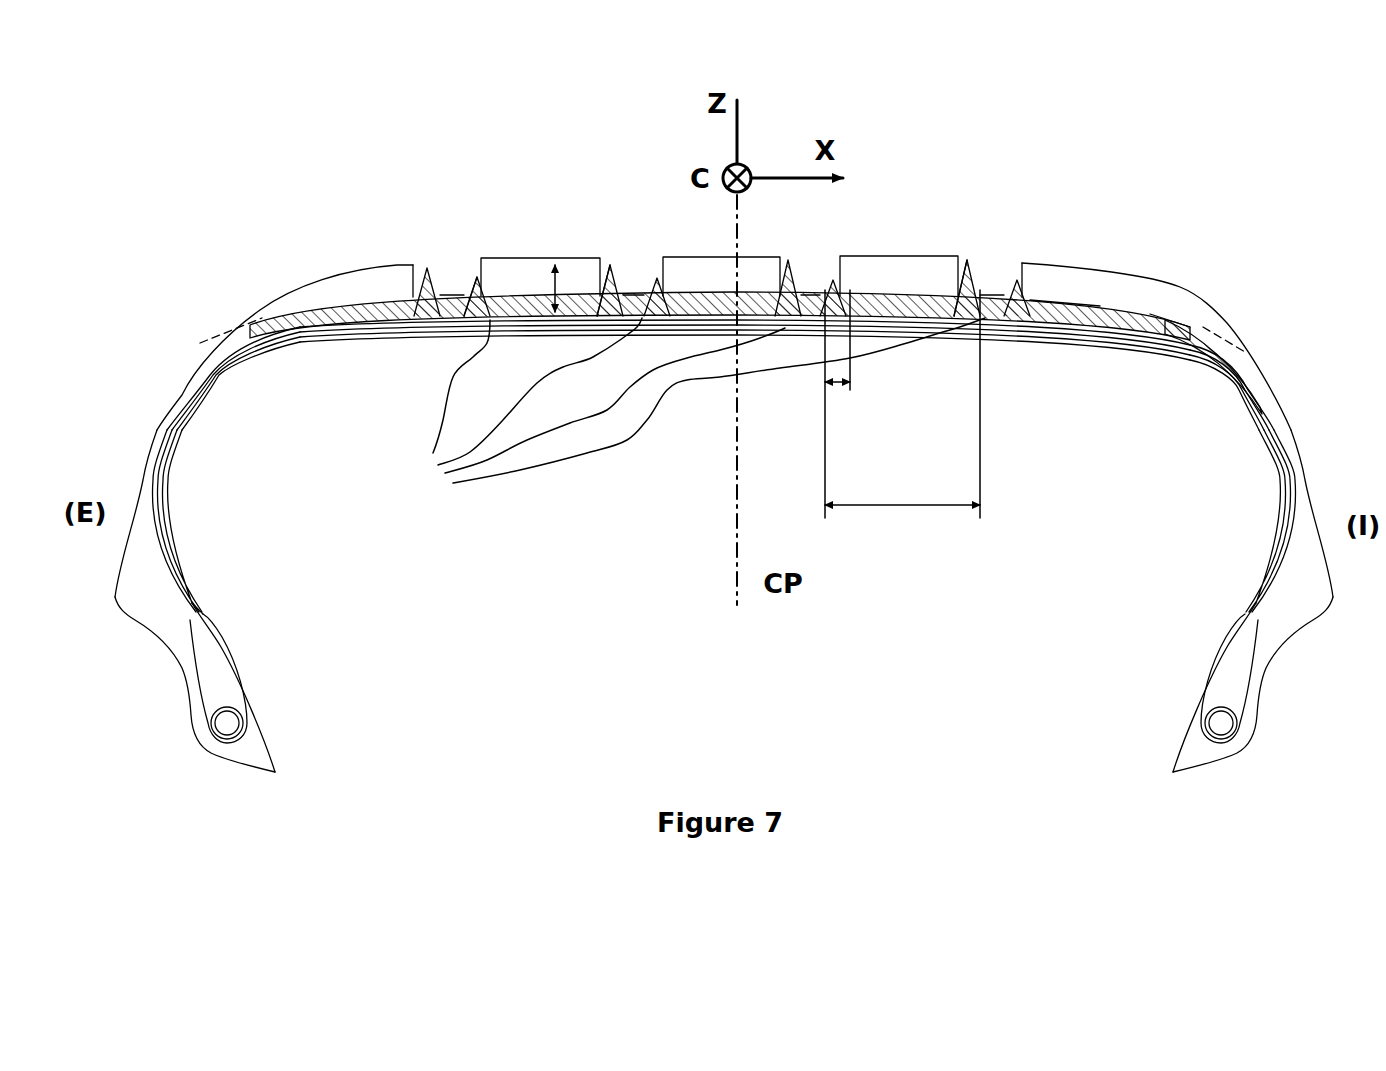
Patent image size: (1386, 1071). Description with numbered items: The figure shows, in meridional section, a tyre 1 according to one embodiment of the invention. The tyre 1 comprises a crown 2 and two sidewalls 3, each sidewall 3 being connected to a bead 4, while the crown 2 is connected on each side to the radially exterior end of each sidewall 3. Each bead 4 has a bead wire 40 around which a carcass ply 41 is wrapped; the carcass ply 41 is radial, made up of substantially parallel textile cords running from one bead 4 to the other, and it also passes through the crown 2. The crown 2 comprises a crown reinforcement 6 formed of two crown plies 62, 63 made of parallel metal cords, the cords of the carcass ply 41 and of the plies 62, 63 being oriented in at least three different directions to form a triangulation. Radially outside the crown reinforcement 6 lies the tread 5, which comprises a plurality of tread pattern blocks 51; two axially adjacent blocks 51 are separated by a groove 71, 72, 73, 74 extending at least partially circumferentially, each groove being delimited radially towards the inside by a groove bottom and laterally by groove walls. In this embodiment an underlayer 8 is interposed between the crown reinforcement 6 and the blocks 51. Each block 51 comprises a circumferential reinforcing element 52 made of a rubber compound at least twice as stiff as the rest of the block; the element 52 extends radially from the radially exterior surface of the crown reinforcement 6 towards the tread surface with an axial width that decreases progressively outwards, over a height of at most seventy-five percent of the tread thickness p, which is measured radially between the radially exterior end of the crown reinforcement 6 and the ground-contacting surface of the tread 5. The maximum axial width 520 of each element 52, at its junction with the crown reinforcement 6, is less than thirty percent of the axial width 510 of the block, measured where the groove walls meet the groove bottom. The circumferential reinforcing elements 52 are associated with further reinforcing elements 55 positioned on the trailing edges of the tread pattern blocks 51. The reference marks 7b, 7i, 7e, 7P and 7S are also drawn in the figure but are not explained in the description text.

The tyre 1 is at (243, 230).
The crown 2 is at (213, 328).
The sidewall 3 is at (164, 405).
The bead 4 is at (178, 707).
The bead wire 40 is at (245, 728).
The carcass ply 41 is at (197, 612).
The tread 5 is at (1107, 263).
The tread pattern block 51 is at (392, 280).
The circumferential reinforcing element 52 is at (688, 414).
The reinforcing element 55 is at (608, 270).
The crown reinforcement 6 is at (1195, 327).
The crown ply 62 is at (1163, 332).
The crown ply 63 is at (1195, 347).
The groove bottom 7b is at (456, 286).
The inner groove face 7i is at (651, 278).
The outer groove face 7e is at (976, 283).
The tread surface 7P is at (1103, 293).
The shoulder surface 7S is at (1173, 312).
The groove 71 is at (459, 279).
The groove 72 is at (640, 255).
The groove 73 is at (820, 281).
The groove 74 is at (995, 292).
The underlayer 8 is at (1135, 327).
The thickness of the tread p is at (555, 285).
The axial width of the block 510 is at (902, 510).
The maximum value of the axial width of the circumferential reinforcing element 520 is at (832, 385).